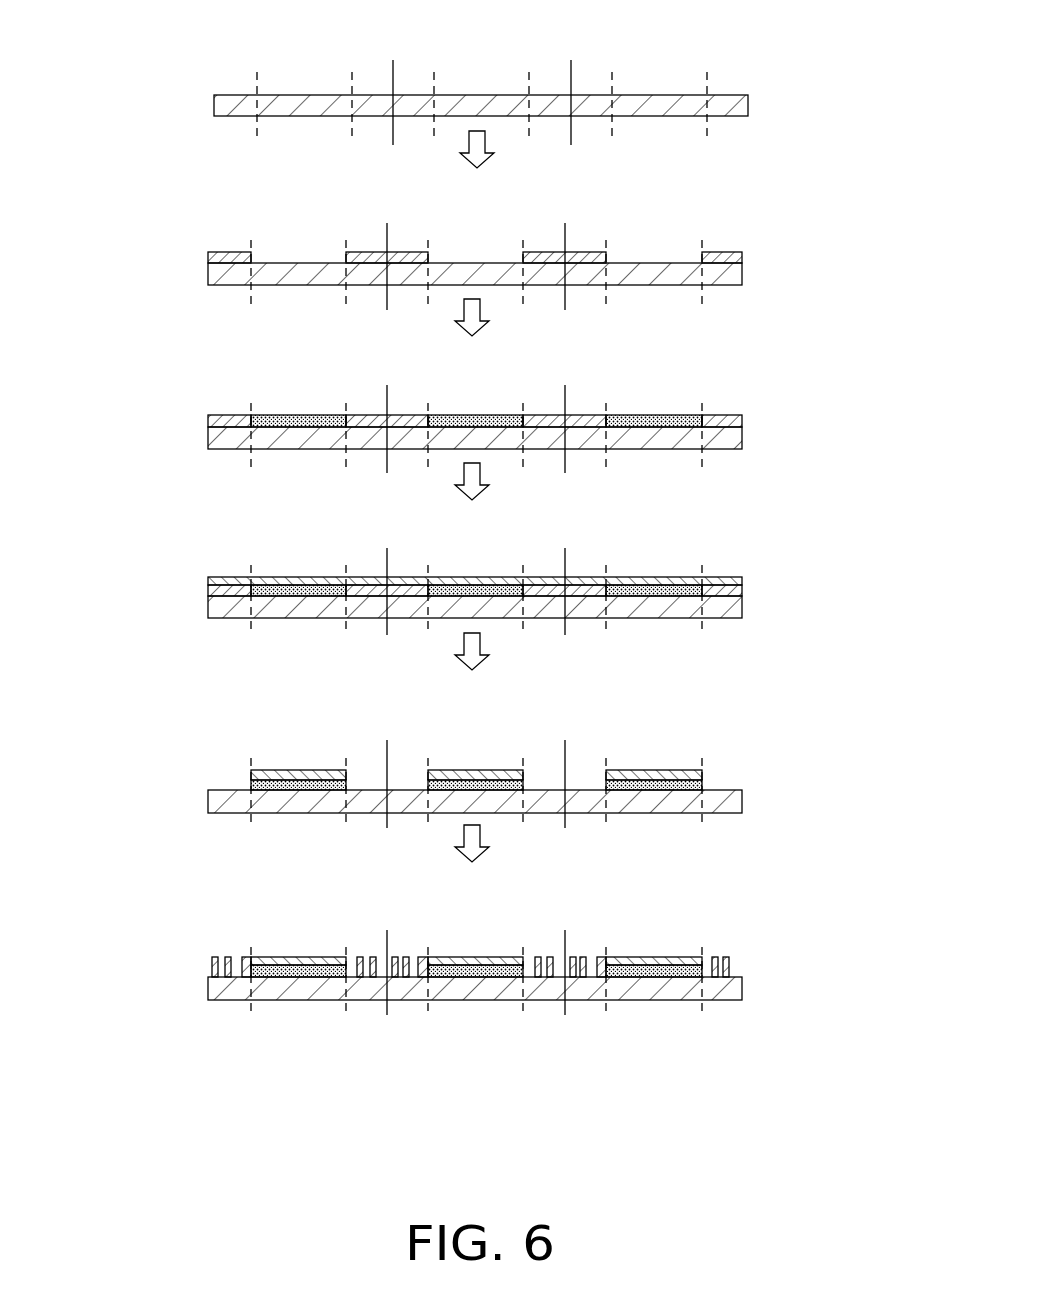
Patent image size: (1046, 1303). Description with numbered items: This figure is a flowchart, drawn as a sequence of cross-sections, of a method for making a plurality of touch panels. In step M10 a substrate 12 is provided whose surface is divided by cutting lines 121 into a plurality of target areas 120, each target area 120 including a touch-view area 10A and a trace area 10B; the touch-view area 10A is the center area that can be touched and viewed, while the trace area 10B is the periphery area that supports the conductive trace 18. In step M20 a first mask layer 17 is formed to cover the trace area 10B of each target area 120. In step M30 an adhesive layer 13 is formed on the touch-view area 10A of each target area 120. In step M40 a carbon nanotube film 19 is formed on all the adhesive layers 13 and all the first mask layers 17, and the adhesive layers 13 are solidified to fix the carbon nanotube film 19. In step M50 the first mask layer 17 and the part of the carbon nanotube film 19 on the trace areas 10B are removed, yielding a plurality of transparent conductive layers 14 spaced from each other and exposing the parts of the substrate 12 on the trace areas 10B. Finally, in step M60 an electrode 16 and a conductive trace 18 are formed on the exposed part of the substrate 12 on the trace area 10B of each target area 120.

The substrate 12 is at (745, 107).
The cutting line 121 is at (393, 67).
The target area 120 is at (687, 68).
The touch-view area 10A is at (666, 94).
The trace area 10B is at (733, 94).
The first mask layer 17 is at (742, 253).
The adhesive layer 13 is at (670, 420).
The carbon nanotube film 19 is at (623, 580).
The transparent conductive layer 14 is at (623, 774).
The electrode 16 is at (598, 958).
The conductive trace 18 is at (726, 958).
The step of providing substrate M10 is at (180, 108).
The step of forming first mask layer M20 is at (175, 276).
The step of forming adhesive layer M30 is at (175, 438).
The step of forming carbon nanotube film M40 is at (175, 609).
The step of removing first mask layer M50 is at (175, 792).
The step of forming electrode and conductive trace M60 is at (175, 990).